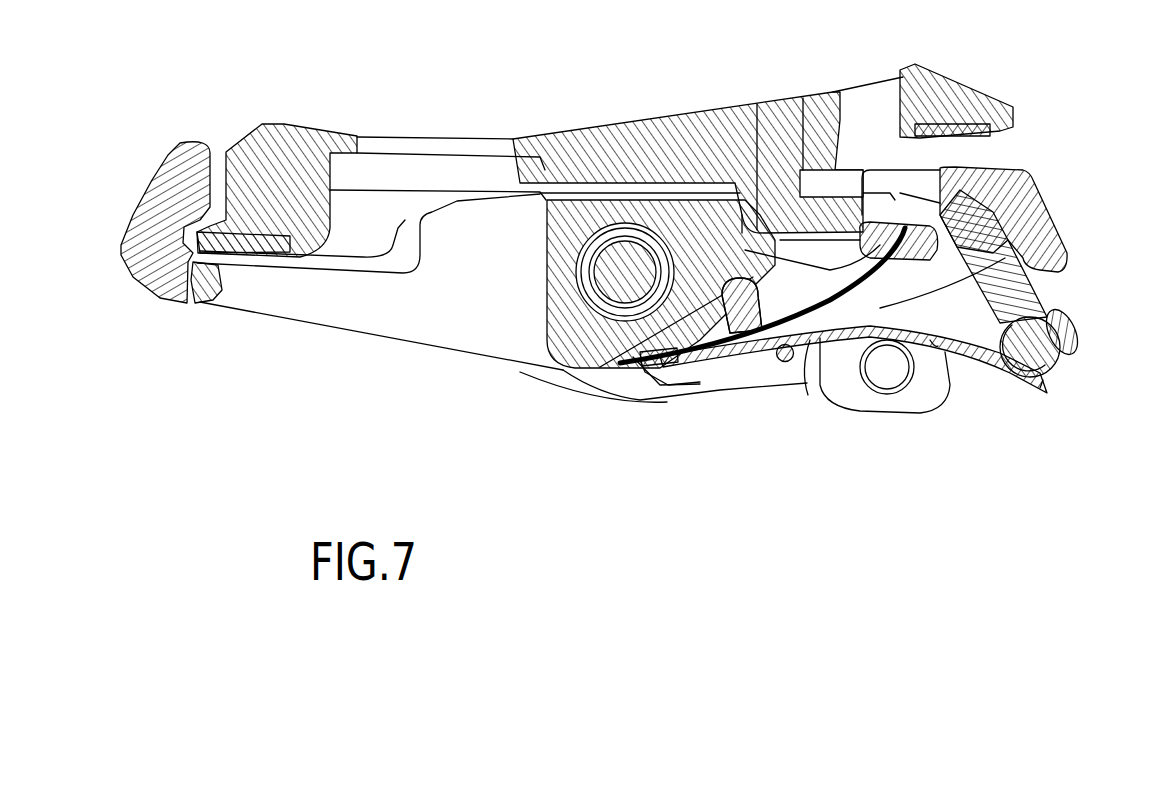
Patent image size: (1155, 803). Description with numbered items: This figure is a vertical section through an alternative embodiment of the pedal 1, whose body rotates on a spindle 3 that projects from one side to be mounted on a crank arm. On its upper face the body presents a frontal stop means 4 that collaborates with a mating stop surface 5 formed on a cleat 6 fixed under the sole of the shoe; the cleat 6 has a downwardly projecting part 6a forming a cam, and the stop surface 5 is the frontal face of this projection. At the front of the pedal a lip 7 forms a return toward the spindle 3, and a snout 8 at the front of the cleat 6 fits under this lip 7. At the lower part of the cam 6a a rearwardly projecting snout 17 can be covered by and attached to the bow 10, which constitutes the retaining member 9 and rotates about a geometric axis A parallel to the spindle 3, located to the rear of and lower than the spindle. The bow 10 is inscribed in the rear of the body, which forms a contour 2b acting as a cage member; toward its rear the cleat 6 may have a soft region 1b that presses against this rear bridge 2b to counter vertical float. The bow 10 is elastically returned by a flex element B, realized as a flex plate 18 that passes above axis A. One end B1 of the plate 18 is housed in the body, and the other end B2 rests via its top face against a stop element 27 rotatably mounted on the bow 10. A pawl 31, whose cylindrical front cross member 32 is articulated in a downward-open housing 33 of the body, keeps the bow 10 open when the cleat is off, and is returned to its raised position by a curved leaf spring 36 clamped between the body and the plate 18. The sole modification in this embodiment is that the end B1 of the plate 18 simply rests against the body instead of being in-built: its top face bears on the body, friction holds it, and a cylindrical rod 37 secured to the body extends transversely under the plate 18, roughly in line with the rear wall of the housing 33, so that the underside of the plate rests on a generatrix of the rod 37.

The pedal 1 is at (268, 358).
The soft region 1b is at (963, 95).
The contour 2b is at (1025, 185).
The spindle 3 is at (620, 275).
The frontal stop means 4 is at (748, 210).
The mating stop surface 5 is at (723, 180).
The cleat 6 is at (650, 126).
The downwardly projecting part 6a is at (790, 165).
The lip 7 is at (183, 190).
The snout 8 is at (207, 240).
The retaining member 9 is at (958, 372).
The bow 10 is at (1062, 310).
The rearwardly projecting snout 17 is at (862, 215).
The flex plate 18 is at (822, 385).
The stop element 27 is at (1050, 365).
The pawl 31 is at (906, 228).
The front cross member 32 is at (705, 365).
The housing 33 is at (748, 340).
The leaf spring 36 is at (1040, 226).
The rod 37 is at (785, 362).
The geometric axis of articulation A is at (887, 368).
The flex element B is at (938, 347).
The end of the flex element B1 is at (668, 385).
The other end of the flex element B2 is at (1040, 388).